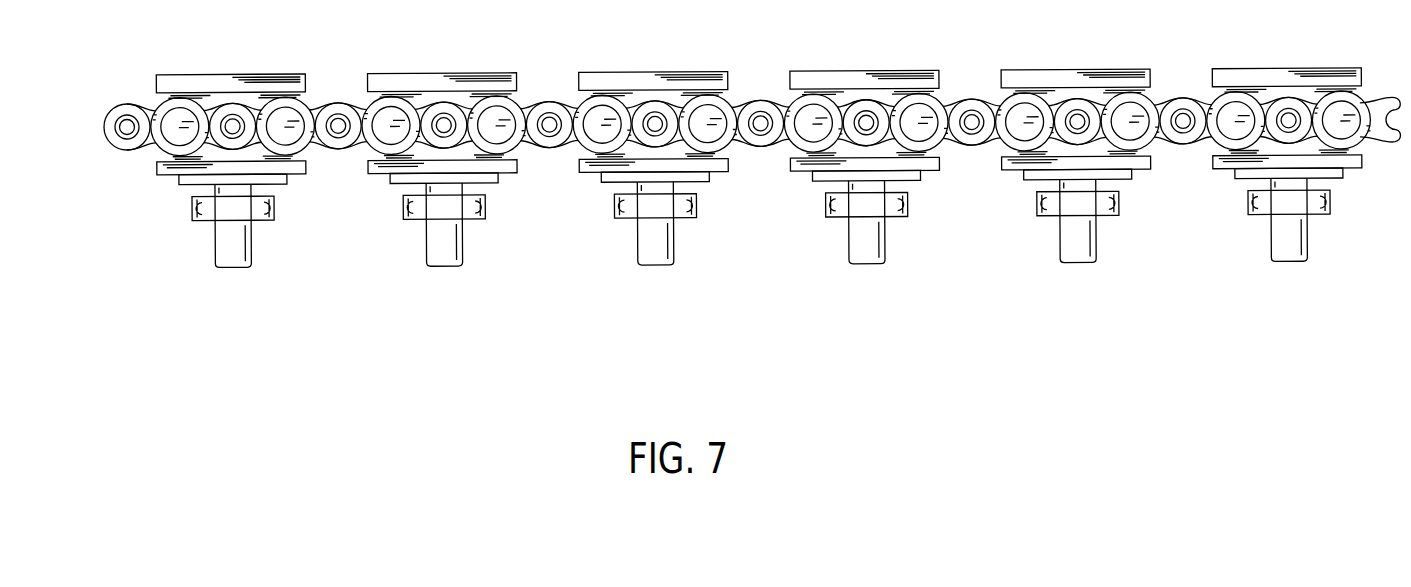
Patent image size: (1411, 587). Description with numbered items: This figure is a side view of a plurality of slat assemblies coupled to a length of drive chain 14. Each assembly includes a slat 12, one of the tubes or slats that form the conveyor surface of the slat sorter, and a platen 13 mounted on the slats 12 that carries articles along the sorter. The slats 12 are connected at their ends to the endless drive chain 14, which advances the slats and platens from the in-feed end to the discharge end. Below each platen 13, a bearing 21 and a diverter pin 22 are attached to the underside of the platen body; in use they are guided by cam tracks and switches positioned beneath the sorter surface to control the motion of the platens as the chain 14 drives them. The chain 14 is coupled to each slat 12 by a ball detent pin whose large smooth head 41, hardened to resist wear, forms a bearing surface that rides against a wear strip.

The slat 12 is at (940, 90).
The platen 13 is at (606, 65).
The endless drive chain 14 is at (341, 87).
The bearing 21 is at (616, 223).
The diverter pin 22 is at (858, 261).
The head 41 is at (810, 116).